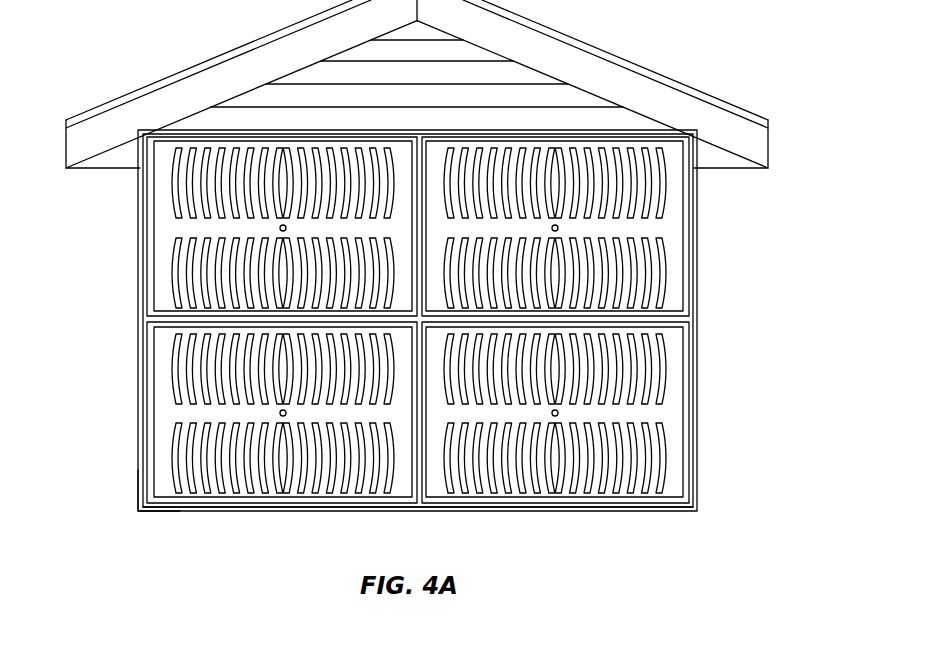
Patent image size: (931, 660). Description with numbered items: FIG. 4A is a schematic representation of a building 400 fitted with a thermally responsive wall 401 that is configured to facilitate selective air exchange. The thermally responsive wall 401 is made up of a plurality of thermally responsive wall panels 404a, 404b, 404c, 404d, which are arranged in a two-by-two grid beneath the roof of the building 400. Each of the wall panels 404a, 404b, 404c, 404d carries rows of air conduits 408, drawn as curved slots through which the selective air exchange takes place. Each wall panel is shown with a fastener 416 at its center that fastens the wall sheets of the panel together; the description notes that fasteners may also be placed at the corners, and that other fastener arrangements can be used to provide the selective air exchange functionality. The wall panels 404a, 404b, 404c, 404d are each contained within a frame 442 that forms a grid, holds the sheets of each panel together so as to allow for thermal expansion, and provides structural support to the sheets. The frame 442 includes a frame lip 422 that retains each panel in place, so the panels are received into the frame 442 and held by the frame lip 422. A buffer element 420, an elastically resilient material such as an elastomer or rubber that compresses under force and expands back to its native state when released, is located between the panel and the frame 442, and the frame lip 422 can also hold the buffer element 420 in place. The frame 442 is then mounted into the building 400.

The building 400 is at (635, 516).
The thermally responsive wall 401 is at (160, 467).
The thermally responsive wall panel 404a is at (156, 184).
The thermally responsive wall panel 404b is at (670, 188).
The thermally responsive wall panel 404c is at (156, 337).
The thermally responsive wall panel 404d is at (672, 343).
The air conduit 408 is at (173, 273).
The fastener 416 is at (280, 228).
The buffer element 420 is at (200, 507).
The frame lip 422 is at (155, 507).
The frame 442 is at (141, 373).